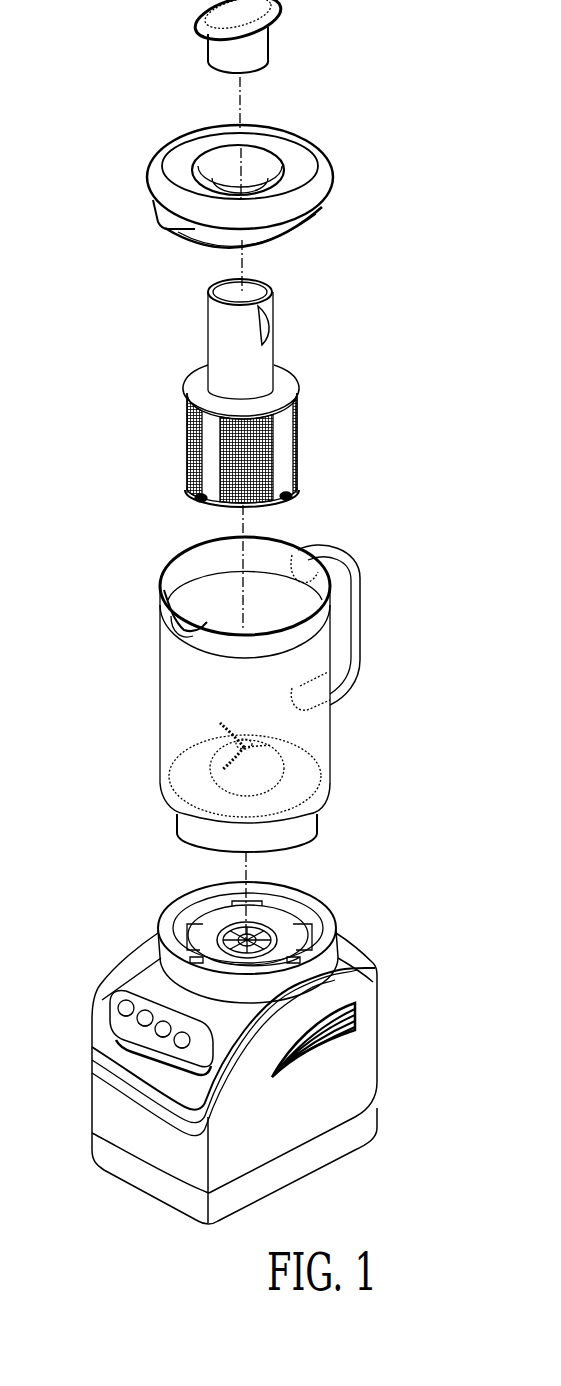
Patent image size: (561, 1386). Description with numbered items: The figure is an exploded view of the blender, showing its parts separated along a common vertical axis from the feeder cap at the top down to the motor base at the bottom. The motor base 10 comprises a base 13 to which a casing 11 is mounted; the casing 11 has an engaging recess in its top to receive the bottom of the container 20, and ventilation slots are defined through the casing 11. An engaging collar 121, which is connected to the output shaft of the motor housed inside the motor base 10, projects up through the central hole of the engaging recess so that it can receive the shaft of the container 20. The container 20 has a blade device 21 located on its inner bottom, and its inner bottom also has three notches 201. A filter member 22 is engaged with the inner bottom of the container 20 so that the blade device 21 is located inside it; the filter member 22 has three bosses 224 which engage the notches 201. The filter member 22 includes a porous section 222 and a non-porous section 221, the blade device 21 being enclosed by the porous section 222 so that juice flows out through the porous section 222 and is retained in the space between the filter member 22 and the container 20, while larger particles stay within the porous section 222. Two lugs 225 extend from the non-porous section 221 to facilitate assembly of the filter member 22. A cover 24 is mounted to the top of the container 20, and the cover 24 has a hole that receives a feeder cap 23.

The motor base 10 is at (314, 1046).
The casing 11 is at (350, 1073).
The base 13 is at (323, 1152).
The engaging collar 121 is at (268, 930).
The container 20 is at (271, 694).
The notches 201 is at (305, 748).
The blade device 21 is at (220, 725).
The filter member 22 is at (339, 394).
The non-porous section 221 is at (265, 355).
The porous section 222 is at (257, 453).
The bosses 224 is at (339, 497).
The lugs 225 is at (270, 312).
The feeder cap 23 is at (255, 48).
The cover 24 is at (298, 192).